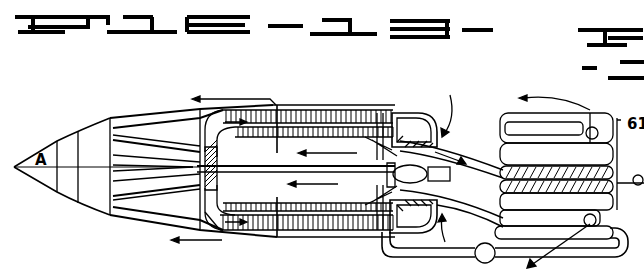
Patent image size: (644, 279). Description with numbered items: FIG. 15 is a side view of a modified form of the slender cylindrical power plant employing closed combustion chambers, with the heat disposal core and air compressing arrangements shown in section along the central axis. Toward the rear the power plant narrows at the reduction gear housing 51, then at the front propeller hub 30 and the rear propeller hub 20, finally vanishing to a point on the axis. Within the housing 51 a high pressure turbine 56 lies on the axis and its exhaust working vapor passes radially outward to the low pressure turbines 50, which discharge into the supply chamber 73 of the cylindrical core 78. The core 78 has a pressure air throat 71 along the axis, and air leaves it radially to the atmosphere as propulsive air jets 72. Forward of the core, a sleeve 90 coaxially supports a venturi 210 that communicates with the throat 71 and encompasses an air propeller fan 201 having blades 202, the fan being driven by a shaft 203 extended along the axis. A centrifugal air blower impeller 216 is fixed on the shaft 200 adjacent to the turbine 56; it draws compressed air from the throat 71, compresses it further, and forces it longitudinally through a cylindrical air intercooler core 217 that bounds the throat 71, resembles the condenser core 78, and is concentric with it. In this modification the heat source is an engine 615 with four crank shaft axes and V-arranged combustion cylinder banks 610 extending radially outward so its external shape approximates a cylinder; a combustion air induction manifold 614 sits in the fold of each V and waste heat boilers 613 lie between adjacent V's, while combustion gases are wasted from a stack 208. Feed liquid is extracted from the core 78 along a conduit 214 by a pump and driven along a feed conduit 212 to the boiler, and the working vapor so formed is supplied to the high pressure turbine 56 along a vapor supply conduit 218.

The rear propeller hub 20 is at (40, 182).
The front propeller hub 30 is at (70, 138).
The low pressure turbine 50 is at (183, 137).
The reduction gear housing 51 is at (100, 195).
The high pressure turbine 56 is at (116, 160).
The pressure air throat 71 is at (341, 150).
The propulsive air jets 72 is at (223, 98).
The supply chamber 73 is at (214, 223).
The cylindrical core 78 is at (309, 106).
The sleeve 90 is at (423, 113).
The shaft 200 is at (295, 162).
The air propeller fan 201 is at (392, 164).
The blades 202 is at (410, 206).
The shaft 203 is at (428, 182).
The stack 208 is at (600, 122).
The venturi 210 is at (407, 113).
The feed conduit 212 is at (525, 260).
The conduit 214 is at (468, 258).
The centrifugal air blower impeller 216 is at (218, 184).
The cylindrical air intercooler core 217 is at (215, 150).
The vapor supply conduit 218 is at (467, 231).
The combustion cylinder banks 610 is at (592, 126).
The waste heat boilers 613 is at (508, 112).
The combustion air induction manifold 614 is at (540, 150).
The engine 615 is at (540, 118).